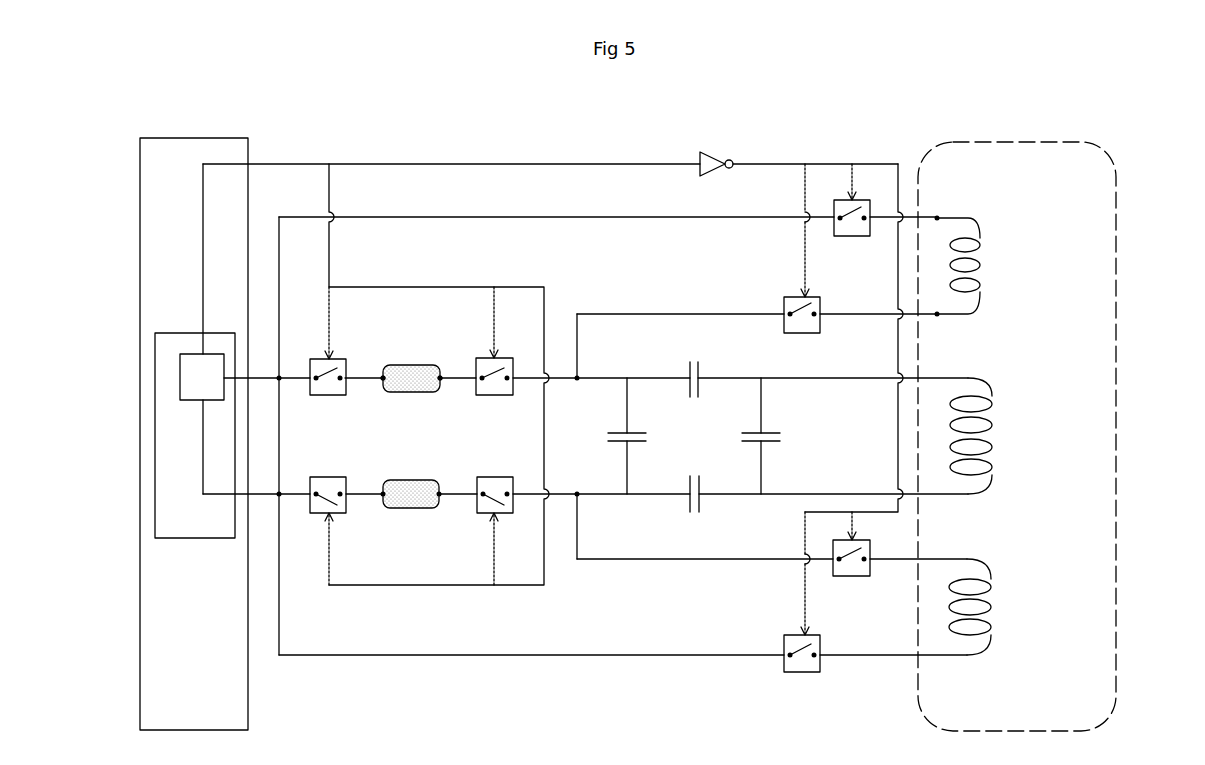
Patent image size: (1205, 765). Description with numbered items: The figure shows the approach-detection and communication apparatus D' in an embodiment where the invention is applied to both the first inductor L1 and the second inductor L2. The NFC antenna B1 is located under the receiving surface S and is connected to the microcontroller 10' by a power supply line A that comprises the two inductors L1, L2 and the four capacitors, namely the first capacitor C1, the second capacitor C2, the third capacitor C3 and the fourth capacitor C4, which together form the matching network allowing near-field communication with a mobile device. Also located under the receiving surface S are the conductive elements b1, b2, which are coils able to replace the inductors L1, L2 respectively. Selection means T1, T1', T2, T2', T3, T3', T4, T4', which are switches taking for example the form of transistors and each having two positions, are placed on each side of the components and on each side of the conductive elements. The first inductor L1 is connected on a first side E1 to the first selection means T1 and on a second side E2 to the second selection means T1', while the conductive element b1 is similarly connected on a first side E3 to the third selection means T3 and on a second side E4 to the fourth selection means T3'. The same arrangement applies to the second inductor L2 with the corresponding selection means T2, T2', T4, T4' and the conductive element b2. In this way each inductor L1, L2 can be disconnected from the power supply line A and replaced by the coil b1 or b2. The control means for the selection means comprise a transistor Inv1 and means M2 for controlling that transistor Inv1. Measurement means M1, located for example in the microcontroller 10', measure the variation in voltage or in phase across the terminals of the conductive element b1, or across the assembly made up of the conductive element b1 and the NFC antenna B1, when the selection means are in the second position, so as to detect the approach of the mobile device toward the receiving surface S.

The microcontroller 10' is at (160, 434).
The approach-detection and communication apparatus D' is at (396, 79).
The receiving surface S is at (1113, 142).
The measurement means M1 is at (188, 445).
The control means M2 is at (213, 388).
The transistor Inv1 is at (704, 152).
The first selection means T1 is at (321, 341).
The second selection means T1' is at (501, 341).
The selection means T2 is at (321, 531).
The selection means T2' is at (502, 531).
The third selection means T3 is at (845, 200).
The fourth selection means T3' is at (794, 248).
The selection means T4 is at (845, 556).
The selection means T4' is at (794, 604).
The first inductor L1 is at (412, 366).
The second inductor L2 is at (411, 507).
The first side of component L1 E1 is at (382, 382).
The second side of component L1 E2 is at (441, 382).
The first side of conductive element b1 E3 is at (946, 208).
The second side of conductive element b1 E4 is at (946, 326).
The power supply line A is at (358, 376).
The first capacitor C1 is at (614, 436).
The second capacitor C2 is at (692, 366).
The third capacitor C3 is at (692, 506).
The fourth capacitor C4 is at (776, 436).
The conductive element b1 is at (978, 266).
The NFC antenna B1 is at (985, 436).
The conductive element b2 is at (984, 607).